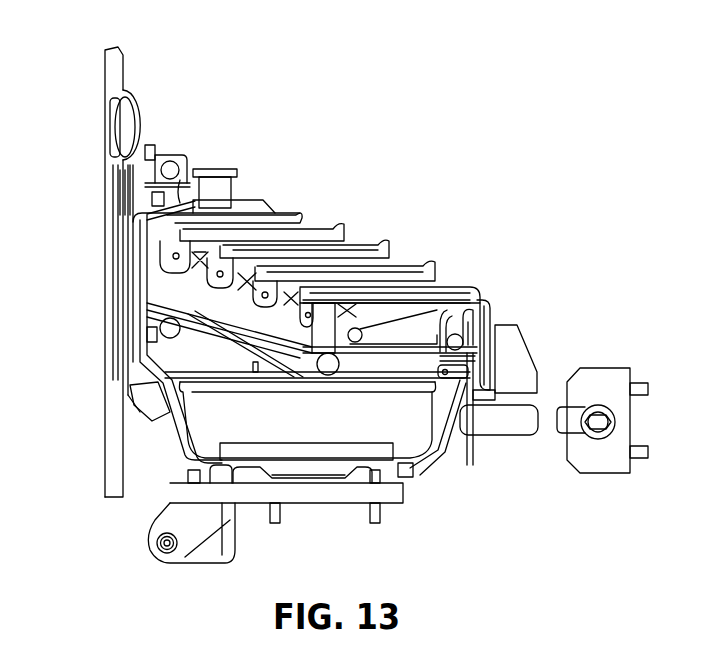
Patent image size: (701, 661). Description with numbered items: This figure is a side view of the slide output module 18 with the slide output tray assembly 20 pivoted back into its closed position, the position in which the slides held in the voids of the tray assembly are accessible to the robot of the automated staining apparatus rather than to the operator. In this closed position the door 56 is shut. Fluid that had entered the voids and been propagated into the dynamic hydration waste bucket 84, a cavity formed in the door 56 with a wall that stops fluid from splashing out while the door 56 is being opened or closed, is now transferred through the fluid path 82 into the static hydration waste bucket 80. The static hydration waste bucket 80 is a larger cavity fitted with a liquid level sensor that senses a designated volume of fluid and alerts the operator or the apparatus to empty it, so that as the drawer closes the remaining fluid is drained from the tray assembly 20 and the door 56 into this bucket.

The slide output module 18 is at (74, 88).
The door 56 is at (103, 220).
The slide output tray assembly 20 is at (317, 203).
The dynamic hydration waste bucket 84 is at (147, 278).
The fluid path 82 is at (172, 326).
The static hydration waste bucket 80 is at (378, 452).